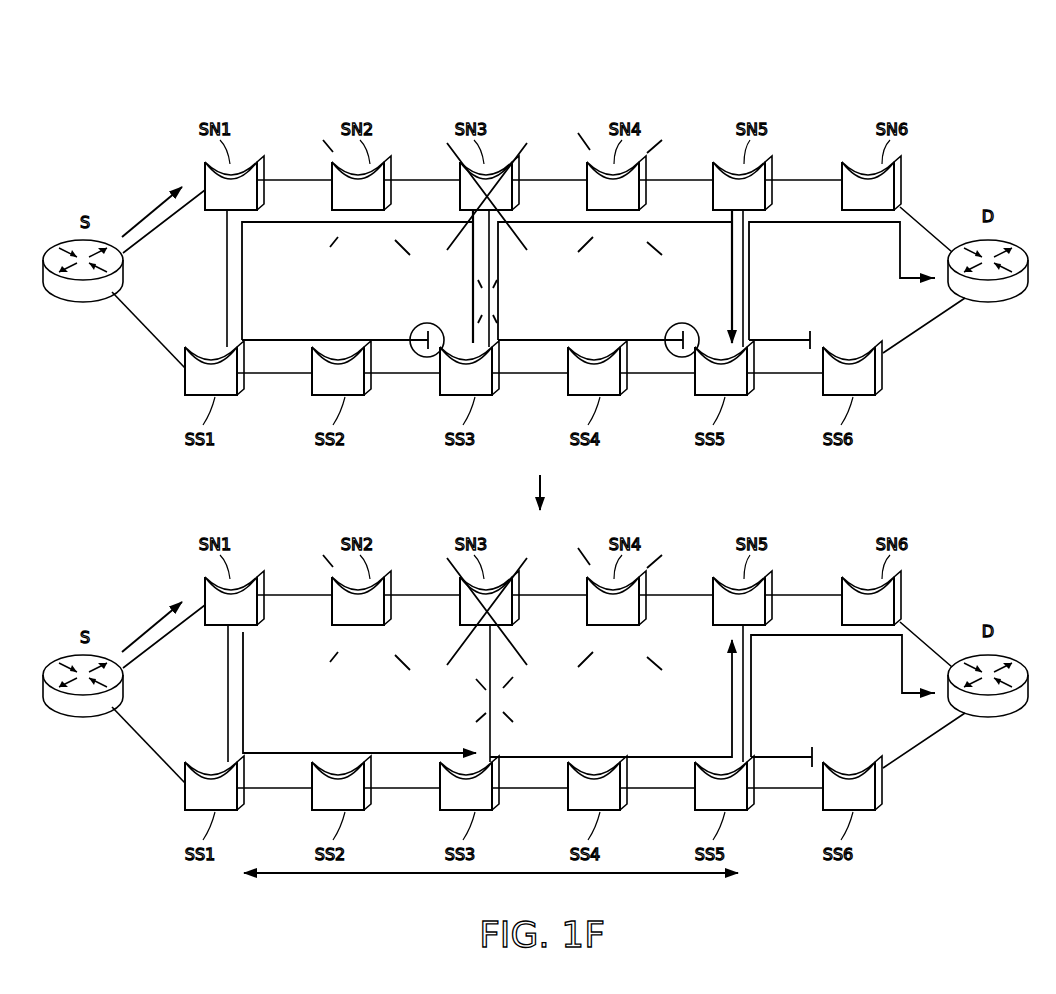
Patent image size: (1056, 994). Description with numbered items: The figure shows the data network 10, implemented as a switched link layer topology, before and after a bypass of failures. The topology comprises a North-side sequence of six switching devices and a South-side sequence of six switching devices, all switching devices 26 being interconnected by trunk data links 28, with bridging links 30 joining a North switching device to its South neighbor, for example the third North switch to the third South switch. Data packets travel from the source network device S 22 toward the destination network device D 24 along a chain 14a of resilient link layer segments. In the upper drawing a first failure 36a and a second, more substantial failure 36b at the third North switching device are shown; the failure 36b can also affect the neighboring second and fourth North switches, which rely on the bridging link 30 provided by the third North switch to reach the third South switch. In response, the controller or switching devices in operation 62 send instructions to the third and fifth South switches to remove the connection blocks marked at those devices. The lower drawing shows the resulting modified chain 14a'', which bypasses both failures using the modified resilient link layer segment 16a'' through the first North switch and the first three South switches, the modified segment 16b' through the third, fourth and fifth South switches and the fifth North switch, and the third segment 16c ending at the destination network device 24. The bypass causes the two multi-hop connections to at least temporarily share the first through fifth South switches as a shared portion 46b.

The data network 10 is at (930, 146).
The chain of resilient link layer segments 14a is at (135, 362).
The modified chain 14a'' is at (130, 779).
The modified resilient link layer segment 16a'' is at (359, 692).
The modified resilient link layer segment 16b' is at (611, 698).
The third resilient link layer segment 16c is at (815, 638).
The source network device 22 is at (88, 307).
The destination network device 24 is at (988, 305).
The switching device 26 is at (393, 158).
The trunk data link 28 is at (296, 178).
The bridging link 30 is at (227, 288).
The failure 36a is at (366, 100).
The second failure 36b is at (471, 100).
The shared portion 46b is at (391, 877).
The operation 62 is at (425, 358).